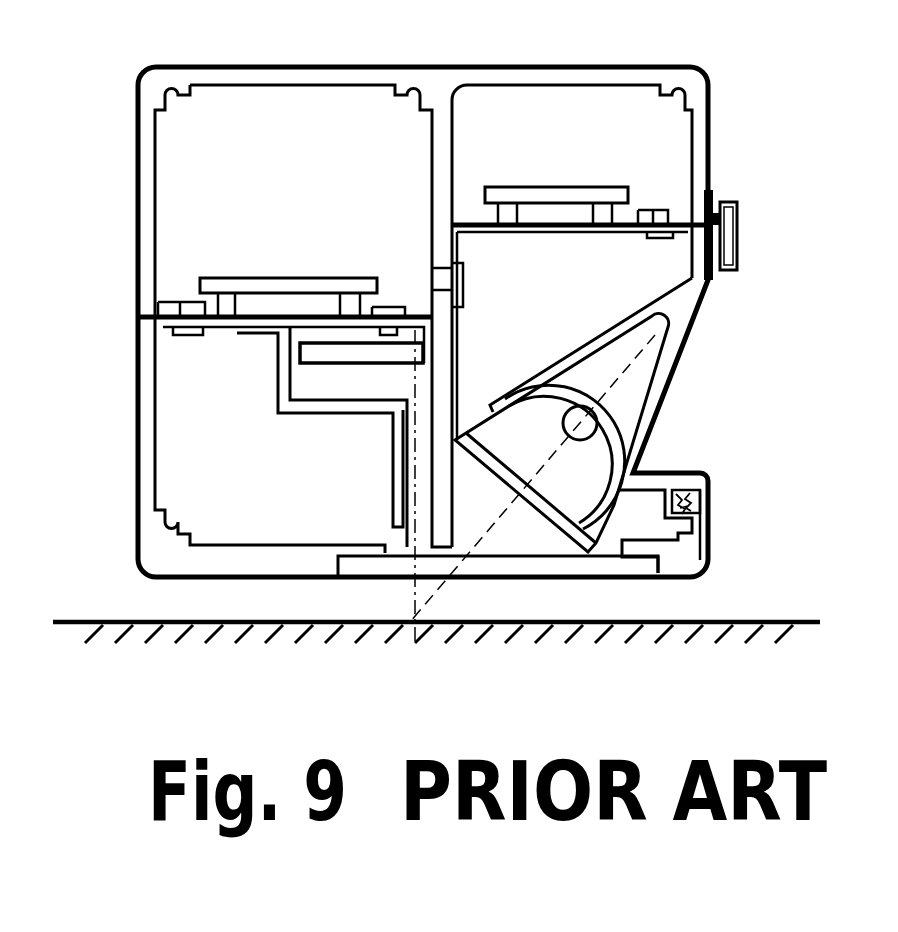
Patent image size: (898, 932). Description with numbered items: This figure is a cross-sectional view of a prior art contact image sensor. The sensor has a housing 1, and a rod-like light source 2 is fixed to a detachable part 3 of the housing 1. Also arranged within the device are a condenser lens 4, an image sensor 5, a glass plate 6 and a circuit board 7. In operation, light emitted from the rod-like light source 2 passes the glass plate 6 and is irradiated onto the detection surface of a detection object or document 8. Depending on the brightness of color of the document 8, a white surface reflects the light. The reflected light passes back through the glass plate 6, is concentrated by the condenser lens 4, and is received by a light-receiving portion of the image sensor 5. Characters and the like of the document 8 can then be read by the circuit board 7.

The housing 1 is at (682, 82).
The rod-like light source 2 is at (622, 412).
The detachable part 3 is at (690, 303).
The condenser lens 4 is at (455, 438).
The image sensor 5 is at (392, 355).
The glass plate 6 is at (635, 580).
The circuit board 7 is at (283, 277).
The document 8 is at (88, 620).